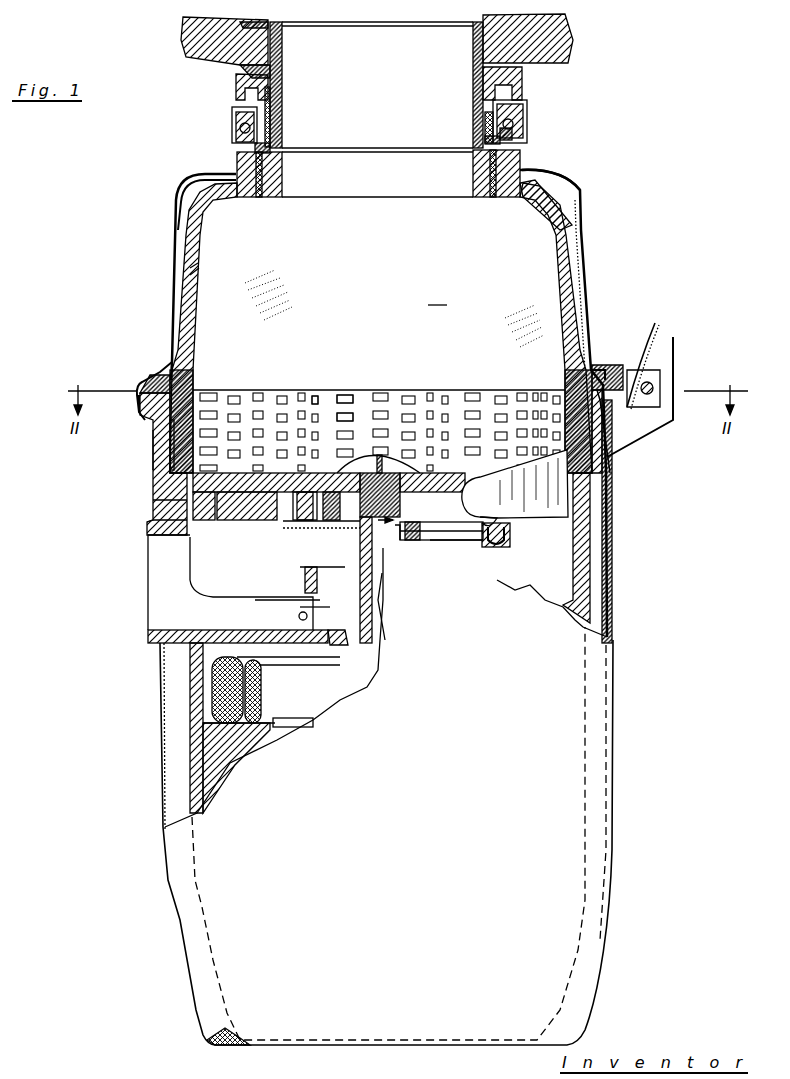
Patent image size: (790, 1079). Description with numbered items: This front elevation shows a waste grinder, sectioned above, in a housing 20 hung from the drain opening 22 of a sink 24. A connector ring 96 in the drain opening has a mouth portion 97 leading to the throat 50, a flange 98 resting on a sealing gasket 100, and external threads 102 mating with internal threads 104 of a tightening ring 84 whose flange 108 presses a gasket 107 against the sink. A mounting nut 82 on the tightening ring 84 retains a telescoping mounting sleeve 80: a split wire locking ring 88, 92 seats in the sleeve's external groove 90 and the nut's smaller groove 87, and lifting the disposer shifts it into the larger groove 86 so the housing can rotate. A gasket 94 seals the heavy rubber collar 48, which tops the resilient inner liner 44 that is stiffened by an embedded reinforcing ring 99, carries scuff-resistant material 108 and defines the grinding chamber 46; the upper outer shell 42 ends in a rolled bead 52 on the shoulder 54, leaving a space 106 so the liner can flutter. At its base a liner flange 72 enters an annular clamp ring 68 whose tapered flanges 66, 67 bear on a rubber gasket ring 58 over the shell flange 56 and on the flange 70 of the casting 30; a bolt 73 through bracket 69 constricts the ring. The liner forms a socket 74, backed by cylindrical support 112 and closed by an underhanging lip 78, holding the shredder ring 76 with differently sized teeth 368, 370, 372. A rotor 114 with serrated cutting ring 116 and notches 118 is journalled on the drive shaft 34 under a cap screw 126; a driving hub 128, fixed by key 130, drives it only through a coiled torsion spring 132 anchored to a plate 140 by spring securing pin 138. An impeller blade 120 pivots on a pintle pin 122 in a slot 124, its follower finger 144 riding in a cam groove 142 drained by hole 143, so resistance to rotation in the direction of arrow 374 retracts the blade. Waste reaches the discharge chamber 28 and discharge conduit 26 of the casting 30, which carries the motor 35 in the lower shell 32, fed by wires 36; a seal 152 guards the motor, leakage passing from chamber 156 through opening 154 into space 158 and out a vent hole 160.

The sealing gasket 100 is at (238, 19).
The sink 24 is at (573, 38).
The connector ring 96 is at (283, 36).
The drain opening 22 is at (472, 44).
The mouth portion 97 is at (394, 25).
The outwardly extending flange 98 is at (258, 22).
The gasket 107 is at (245, 70).
The external threads 102 is at (272, 90).
The internal threads 104 is at (283, 106).
The mounting nut 82 is at (228, 140).
The gasket 94 is at (272, 147).
The telescoping mounting sleeve 80 is at (237, 166).
The tightening ring 84 is at (490, 98).
The large internal groove 86 is at (520, 118).
The wire locking ring 88 is at (514, 125).
The smaller groove 87 is at (513, 136).
The external groove 90 is at (485, 122).
The wire locking ring 92 is at (485, 138).
The heavy rubber collar 48 is at (473, 176).
The throat 50 is at (418, 198).
The inner liner 44 is at (563, 251).
The shoulder 54 is at (525, 195).
The rolled under annular bead 52 is at (540, 170).
The upper outer metal shell 42 is at (583, 221).
The space 106 is at (578, 269).
The reinforcing ring 99 is at (176, 203).
The scuff-resistant material 108 is at (199, 270).
The grinding chamber 46 is at (437, 296).
The shredder ring 76 is at (232, 392).
The tooth 368 is at (300, 394).
The tooth 370 is at (318, 402).
The tooth 372 is at (355, 410).
The annular flange 70 is at (148, 422).
The annular clamp ring 68 is at (140, 386).
The annular flange 72 is at (155, 377).
The lower tapered flange 67 is at (138, 406).
The circular socket 74 is at (166, 438).
The cylindrical support 112 is at (172, 459).
The underhanging lip 78 is at (160, 493).
The teeth or notches 118 is at (160, 511).
The annular rubber gasket ring 58 is at (598, 366).
The annular flange 56 is at (602, 372).
The upper tapered flange 66 is at (631, 407).
The leads or wires 36 is at (657, 327).
The projecting bracket 69 is at (648, 376).
The tightening bolt 73 is at (653, 392).
The rotor 114 is at (255, 512).
The serrated cutting ring 116 is at (210, 519).
The cap screw 126 is at (378, 484).
The spring securing pin 138 is at (300, 522).
The plate 140 is at (325, 528).
The driving hub 128 is at (422, 542).
The key 130 is at (402, 545).
The arrow 374 is at (388, 522).
The coiled torsion spring 132 is at (447, 542).
The pintle pin 122 is at (472, 542).
The follower finger 144 is at (511, 536).
The slot 124 is at (566, 518).
The arcuate cam groove 142 is at (512, 548).
The hole 143 is at (552, 608).
The impeller blade 120 is at (595, 493).
The lower shell 32 is at (613, 613).
The discharge conduit 26 is at (146, 628).
The discharge chamber 28 is at (210, 593).
The chamber 156 is at (300, 601).
The opening 154 is at (298, 617).
The seal 152 is at (305, 571).
The drive shaft 34 is at (378, 599).
The casting 30 is at (215, 629).
The drive motor 35 is at (285, 722).
The space 158 is at (175, 721).
The housing 20 is at (613, 697).
The vent hole 160 is at (228, 1046).